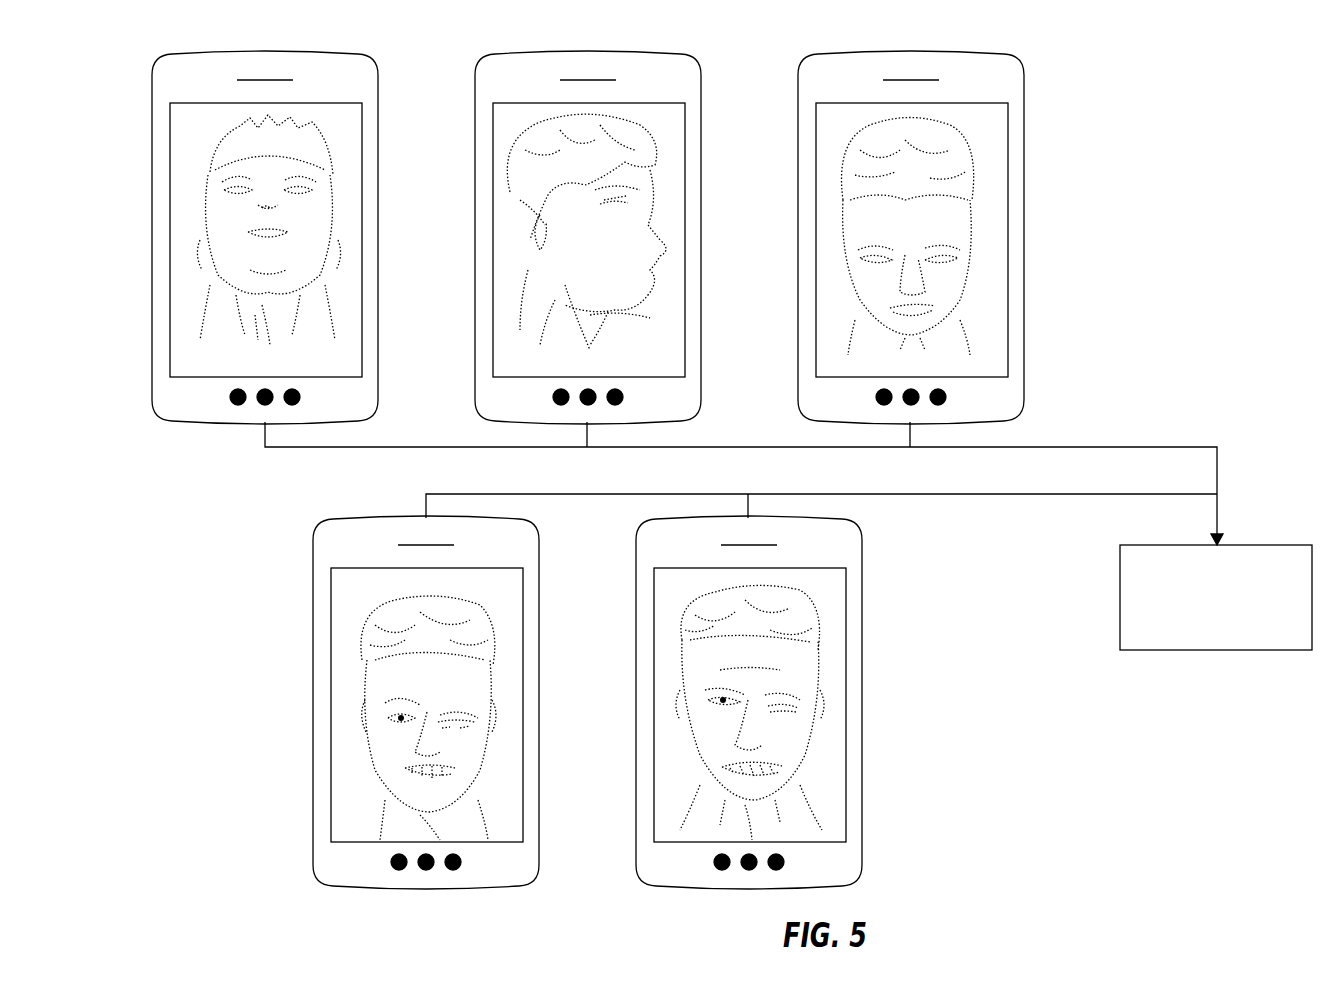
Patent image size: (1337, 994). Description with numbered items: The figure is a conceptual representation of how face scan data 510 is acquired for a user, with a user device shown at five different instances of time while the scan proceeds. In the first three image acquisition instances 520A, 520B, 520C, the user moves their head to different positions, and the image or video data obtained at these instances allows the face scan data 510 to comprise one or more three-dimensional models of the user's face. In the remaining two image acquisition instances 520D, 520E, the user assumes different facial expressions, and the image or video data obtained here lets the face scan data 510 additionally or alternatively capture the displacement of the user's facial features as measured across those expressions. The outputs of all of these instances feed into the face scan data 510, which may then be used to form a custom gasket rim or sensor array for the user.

The face scan data 510 is at (1216, 597).
The image acquisition instance 520A is at (277, 226).
The image acquisition instance 520B is at (601, 226).
The image acquisition instance 520C is at (924, 226).
The image acquisition instance 520D is at (440, 691).
The image acquisition instance 520E is at (761, 691).